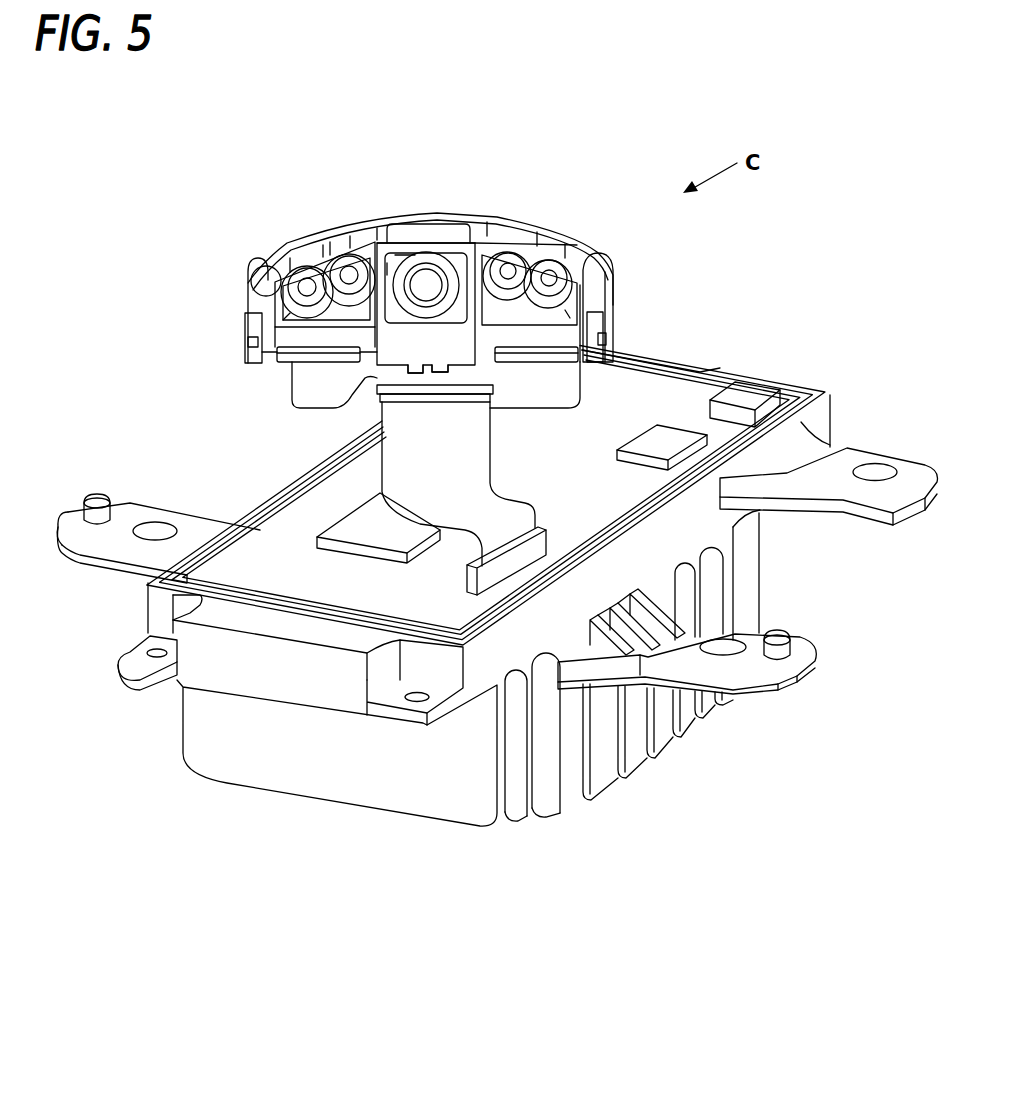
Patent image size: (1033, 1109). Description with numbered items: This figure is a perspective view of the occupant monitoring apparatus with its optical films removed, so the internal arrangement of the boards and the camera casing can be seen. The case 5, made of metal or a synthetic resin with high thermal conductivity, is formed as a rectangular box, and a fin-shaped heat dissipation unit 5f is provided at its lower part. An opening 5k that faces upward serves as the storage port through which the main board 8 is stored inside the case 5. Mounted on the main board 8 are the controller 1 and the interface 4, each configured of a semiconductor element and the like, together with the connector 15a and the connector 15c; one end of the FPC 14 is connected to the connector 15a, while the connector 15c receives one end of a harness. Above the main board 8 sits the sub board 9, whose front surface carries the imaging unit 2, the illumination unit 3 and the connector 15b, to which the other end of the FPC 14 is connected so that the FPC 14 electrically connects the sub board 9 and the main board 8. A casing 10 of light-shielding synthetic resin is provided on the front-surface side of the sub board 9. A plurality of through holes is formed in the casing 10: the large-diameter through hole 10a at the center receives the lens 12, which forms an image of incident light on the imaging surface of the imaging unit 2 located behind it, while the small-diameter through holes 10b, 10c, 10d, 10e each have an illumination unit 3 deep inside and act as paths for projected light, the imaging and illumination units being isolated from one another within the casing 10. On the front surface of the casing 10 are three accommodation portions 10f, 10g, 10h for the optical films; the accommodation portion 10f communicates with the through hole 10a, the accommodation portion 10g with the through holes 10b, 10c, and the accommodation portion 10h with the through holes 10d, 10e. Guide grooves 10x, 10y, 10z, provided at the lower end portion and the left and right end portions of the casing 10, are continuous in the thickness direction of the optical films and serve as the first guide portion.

The controller 1 is at (343, 520).
The imaging unit 2 is at (427, 224).
The illumination unit 3 is at (305, 280).
The interface 4 is at (633, 428).
The case 5 is at (148, 612).
The heat dissipation unit 5f is at (743, 707).
The opening 5k is at (688, 375).
The main board 8 is at (283, 543).
The sub board 9 is at (292, 385).
The casing 10 is at (248, 287).
The through hole 10a is at (400, 255).
The through hole 10b is at (300, 272).
The through hole 10c is at (280, 262).
The through hole 10d is at (490, 263).
The through hole 10e is at (557, 290).
The accommodation portion 10f is at (375, 255).
The accommodation portion 10g is at (285, 313).
The accommodation portion 10h is at (577, 310).
The guide groove 10x is at (430, 372).
The guide groove 10y is at (247, 341).
The guide groove 10z is at (613, 342).
The lens 12 is at (427, 283).
The FPC 14 is at (493, 457).
The connector 15a is at (533, 527).
The connector 15b is at (493, 392).
The connector 15c is at (760, 388).